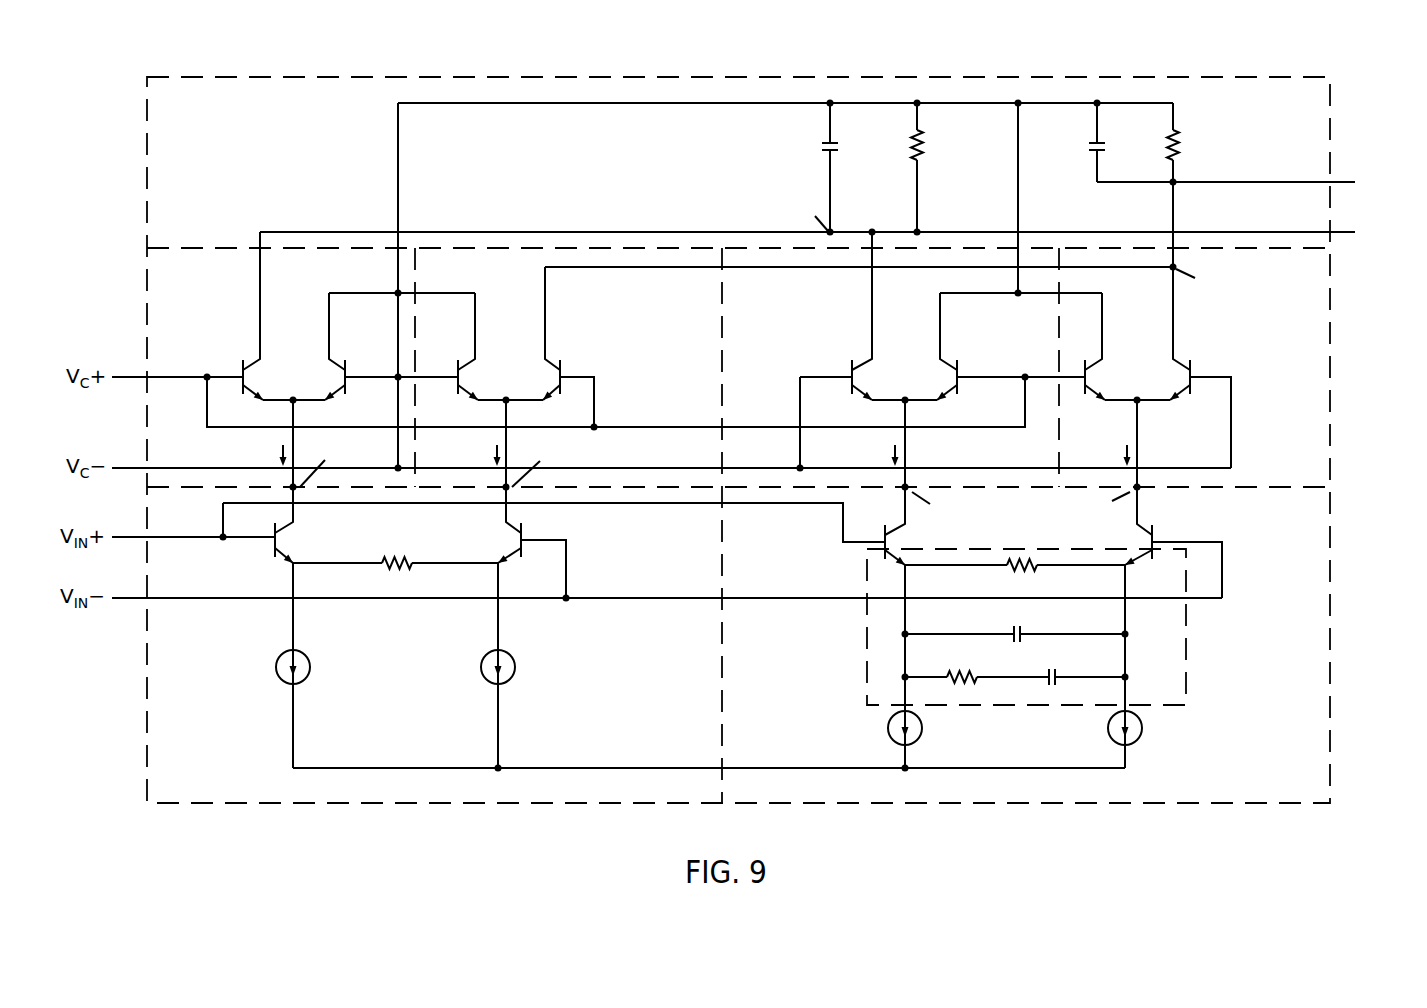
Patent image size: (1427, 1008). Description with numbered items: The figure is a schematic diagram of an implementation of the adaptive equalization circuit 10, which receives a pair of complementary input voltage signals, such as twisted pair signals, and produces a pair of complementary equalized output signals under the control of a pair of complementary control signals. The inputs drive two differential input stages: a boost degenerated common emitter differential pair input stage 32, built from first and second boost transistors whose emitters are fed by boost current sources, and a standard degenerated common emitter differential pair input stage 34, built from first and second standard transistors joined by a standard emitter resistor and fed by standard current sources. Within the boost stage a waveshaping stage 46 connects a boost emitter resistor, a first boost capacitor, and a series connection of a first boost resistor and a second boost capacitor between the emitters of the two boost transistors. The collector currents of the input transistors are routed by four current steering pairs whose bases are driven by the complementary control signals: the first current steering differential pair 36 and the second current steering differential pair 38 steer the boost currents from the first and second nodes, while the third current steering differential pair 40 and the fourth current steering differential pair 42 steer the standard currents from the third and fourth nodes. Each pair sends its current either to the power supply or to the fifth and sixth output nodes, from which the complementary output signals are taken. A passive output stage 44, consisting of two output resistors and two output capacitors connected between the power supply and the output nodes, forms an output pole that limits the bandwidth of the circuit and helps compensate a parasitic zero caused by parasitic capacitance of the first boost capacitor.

The adaptive equalization circuit 10 is at (1366, 68).
The boost degenerated common emitter differential pair input stage 32 is at (1328, 554).
The standard degenerated common emitter differential pair input stage 34 is at (380, 796).
The first current steering differential pair 36 is at (1328, 341).
The second current steering differential pair 38 is at (950, 252).
The third current steering differential pair 40 is at (478, 254).
The fourth current steering differential pair 42 is at (218, 256).
The passive output stage 44 is at (1258, 86).
The waveshaping stage 46 is at (1187, 668).